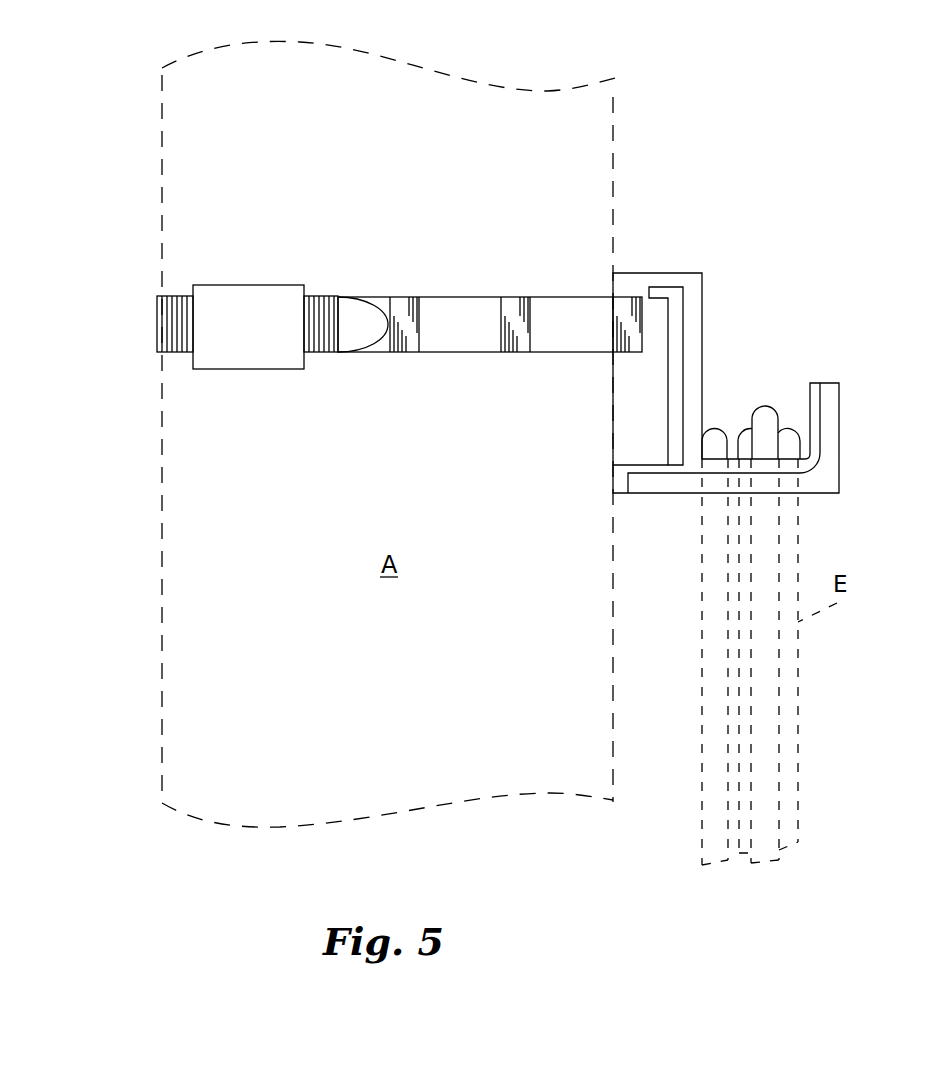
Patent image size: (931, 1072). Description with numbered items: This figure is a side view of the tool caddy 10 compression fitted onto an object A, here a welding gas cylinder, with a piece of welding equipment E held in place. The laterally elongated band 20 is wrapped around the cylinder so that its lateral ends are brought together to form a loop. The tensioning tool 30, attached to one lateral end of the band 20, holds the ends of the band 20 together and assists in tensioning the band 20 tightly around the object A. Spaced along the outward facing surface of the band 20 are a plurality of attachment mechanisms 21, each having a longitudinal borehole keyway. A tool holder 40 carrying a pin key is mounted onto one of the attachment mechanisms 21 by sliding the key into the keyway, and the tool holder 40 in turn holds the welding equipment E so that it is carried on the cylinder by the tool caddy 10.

The tool caddy 10 is at (126, 250).
The band 20 is at (467, 305).
The attachment mechanism 21 is at (410, 348).
The tensioning tool 30 is at (241, 297).
The tool holder 40 is at (697, 310).